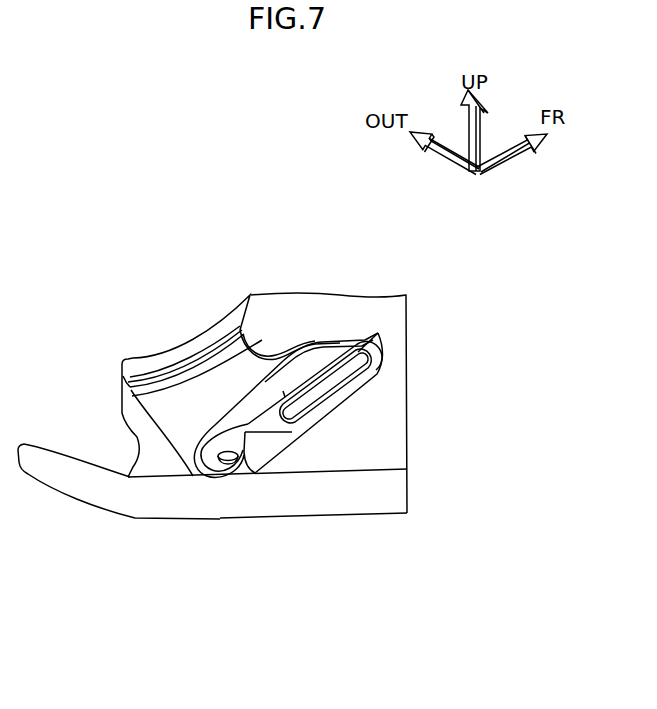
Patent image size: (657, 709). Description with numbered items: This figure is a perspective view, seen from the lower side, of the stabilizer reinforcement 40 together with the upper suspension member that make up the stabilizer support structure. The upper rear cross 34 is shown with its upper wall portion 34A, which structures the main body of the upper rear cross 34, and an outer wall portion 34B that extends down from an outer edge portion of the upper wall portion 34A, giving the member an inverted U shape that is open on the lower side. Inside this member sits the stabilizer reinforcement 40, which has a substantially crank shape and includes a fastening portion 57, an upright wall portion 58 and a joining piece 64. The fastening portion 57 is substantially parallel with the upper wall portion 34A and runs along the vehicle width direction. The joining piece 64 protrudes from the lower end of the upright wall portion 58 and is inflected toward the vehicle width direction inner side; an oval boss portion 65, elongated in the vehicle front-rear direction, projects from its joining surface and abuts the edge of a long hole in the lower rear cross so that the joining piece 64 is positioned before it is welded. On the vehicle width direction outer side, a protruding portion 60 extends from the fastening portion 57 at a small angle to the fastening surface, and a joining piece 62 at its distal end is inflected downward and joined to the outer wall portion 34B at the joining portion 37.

The upper rear cross 34 is at (411, 313).
The upper wall portion 34A is at (385, 430).
The outer wall portion 34B is at (132, 370).
The joining portion 37 is at (163, 381).
The stabilizer reinforcement 40 is at (286, 453).
The fastening portion 57 is at (205, 466).
The upright wall portion 58 is at (267, 447).
The protruding portion 60 is at (185, 425).
The joining piece 62 is at (135, 395).
The joining piece 64 is at (372, 346).
The boss portion 65 is at (365, 380).